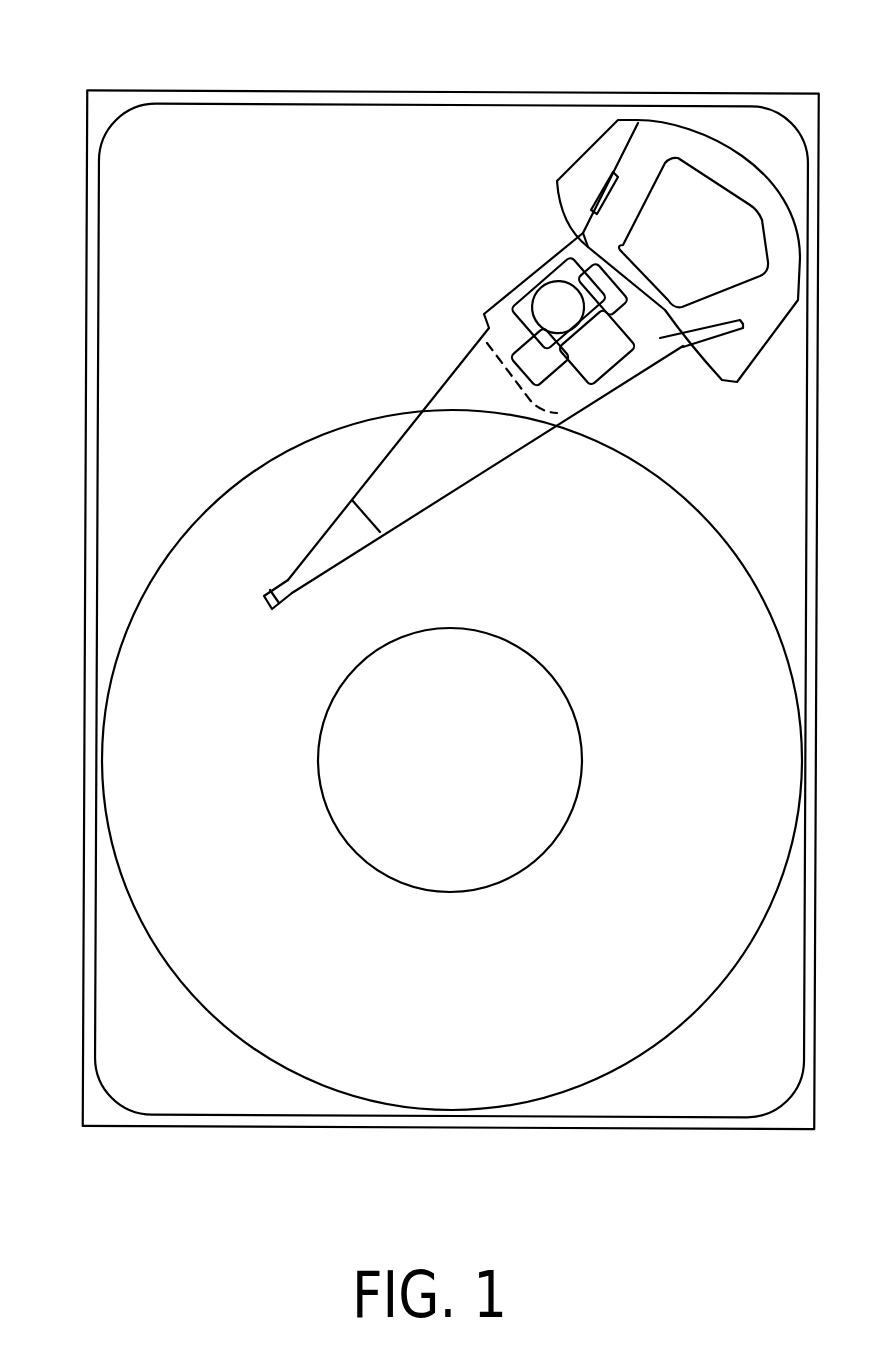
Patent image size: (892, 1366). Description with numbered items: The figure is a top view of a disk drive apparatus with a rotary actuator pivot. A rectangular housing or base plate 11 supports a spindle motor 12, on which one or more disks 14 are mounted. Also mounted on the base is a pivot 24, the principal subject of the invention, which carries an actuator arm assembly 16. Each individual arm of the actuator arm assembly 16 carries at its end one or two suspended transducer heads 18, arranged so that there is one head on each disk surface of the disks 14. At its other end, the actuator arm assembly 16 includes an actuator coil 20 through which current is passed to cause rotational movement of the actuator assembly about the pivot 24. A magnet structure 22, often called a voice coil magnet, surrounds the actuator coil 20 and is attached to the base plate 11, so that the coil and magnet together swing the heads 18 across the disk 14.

The housing or base plate 11 is at (353, 163).
The spindle motor 12 is at (510, 772).
The disk 14 is at (438, 1048).
The actuator arm assembly 16 is at (473, 392).
The suspended transducer head 18 is at (312, 563).
The actuator coil 20 is at (613, 227).
The magnet structure 22 is at (615, 157).
The pivot 24 is at (573, 332).